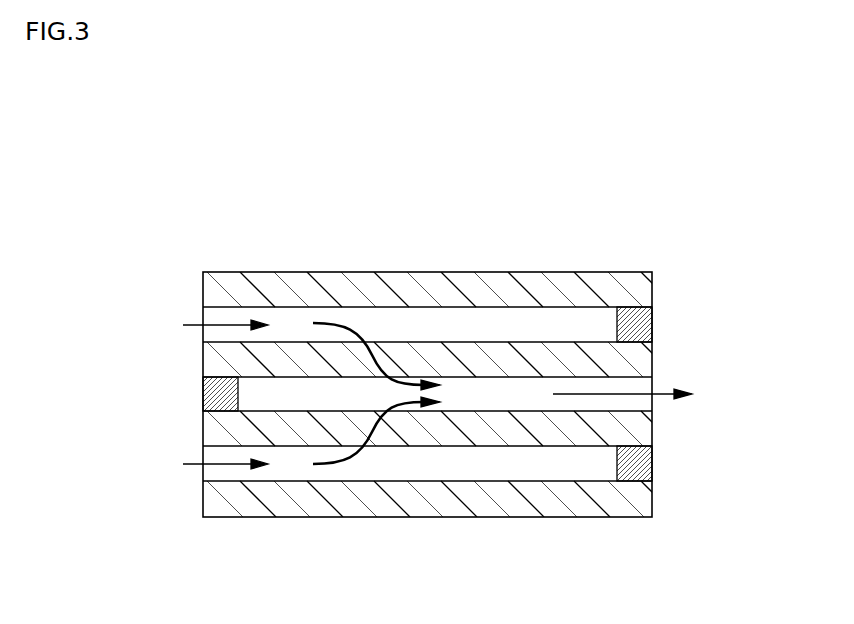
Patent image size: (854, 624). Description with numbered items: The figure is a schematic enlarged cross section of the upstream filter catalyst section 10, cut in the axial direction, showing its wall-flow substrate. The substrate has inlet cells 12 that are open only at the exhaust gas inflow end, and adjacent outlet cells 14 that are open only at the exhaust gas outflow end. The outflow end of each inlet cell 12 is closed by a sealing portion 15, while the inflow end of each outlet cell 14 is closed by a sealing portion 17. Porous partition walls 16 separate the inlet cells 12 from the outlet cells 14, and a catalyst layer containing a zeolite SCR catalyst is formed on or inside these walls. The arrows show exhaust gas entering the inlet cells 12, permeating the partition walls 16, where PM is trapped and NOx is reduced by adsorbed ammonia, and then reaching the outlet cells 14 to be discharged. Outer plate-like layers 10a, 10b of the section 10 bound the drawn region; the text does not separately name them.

The filter catalyst section 10 is at (660, 142).
The first plate member 10a is at (261, 272).
The second plate member 10b is at (598, 272).
The inlet cell 12 is at (427, 320).
The outlet cell 14 is at (508, 395).
The sealing portion 15 is at (656, 320).
The partition wall 16 is at (500, 338).
The sealing portion 17 is at (203, 390).